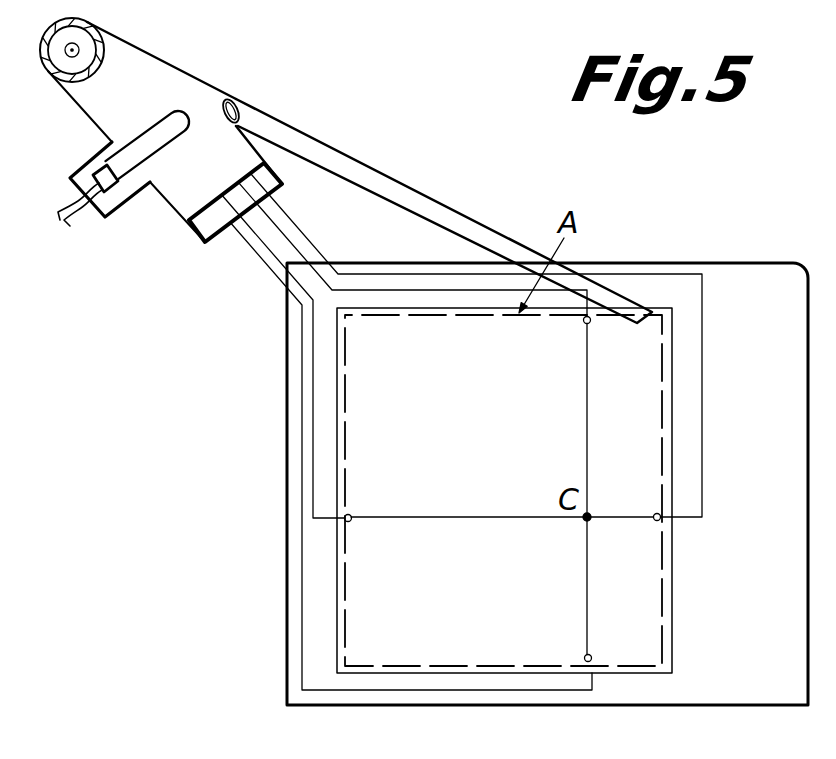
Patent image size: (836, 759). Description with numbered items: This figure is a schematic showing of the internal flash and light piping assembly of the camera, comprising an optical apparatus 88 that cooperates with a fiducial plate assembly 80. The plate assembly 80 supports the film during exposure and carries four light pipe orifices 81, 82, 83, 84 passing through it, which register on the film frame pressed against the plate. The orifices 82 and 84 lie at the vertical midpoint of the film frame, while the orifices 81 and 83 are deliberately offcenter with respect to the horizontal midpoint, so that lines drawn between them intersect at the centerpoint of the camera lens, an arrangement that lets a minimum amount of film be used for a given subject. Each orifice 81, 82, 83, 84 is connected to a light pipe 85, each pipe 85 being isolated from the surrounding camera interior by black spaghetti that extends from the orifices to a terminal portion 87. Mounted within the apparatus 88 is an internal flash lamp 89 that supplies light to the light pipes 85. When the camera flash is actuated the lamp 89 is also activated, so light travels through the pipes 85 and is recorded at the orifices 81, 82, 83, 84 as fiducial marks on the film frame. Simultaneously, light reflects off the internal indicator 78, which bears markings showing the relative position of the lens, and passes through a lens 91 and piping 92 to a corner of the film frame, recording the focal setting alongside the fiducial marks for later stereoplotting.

The internal indicator 78 is at (77, 37).
The plate assembly 80 is at (745, 262).
The light pipe orifice 81 is at (589, 326).
The light pipe orifice 82 is at (661, 518).
The light pipe orifice 83 is at (589, 662).
The light pipe orifice 84 is at (351, 515).
The light pipe 85 is at (316, 223).
The terminal portion 87 is at (203, 219).
The optical apparatus 88 is at (205, 78).
The internal flash lamp 89 is at (131, 165).
The lens 91 is at (242, 106).
The light piping 92 is at (430, 197).